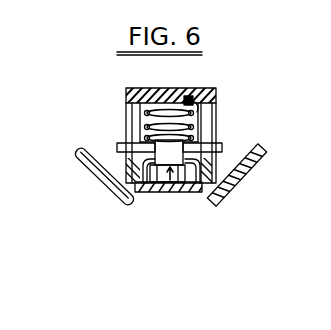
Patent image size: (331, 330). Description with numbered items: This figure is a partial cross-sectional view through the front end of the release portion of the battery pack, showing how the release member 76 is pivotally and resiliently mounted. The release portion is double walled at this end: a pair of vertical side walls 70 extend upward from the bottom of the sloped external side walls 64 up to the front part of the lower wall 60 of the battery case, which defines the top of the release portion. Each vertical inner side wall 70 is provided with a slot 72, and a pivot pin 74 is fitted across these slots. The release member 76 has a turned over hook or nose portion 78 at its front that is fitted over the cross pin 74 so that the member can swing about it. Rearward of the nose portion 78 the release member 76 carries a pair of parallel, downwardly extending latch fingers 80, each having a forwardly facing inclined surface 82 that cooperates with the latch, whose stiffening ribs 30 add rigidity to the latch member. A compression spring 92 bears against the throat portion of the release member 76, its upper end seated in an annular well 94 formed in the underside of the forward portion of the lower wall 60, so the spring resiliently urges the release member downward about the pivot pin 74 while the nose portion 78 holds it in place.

The lower wall 60 is at (157, 88).
The vertical side walls 70 is at (126, 105).
The slot 72 is at (124, 128).
The pivot pin 74 is at (113, 149).
The side walls 64 is at (120, 186).
The inclined surface 82 is at (143, 186).
The stiffening ribs 30 is at (158, 187).
The release member 76 is at (168, 193).
The latch fingers 80 is at (182, 186).
The compression spring 92 is at (213, 108).
The annular well 94 is at (215, 92).
The nose portion 78 is at (165, 150).